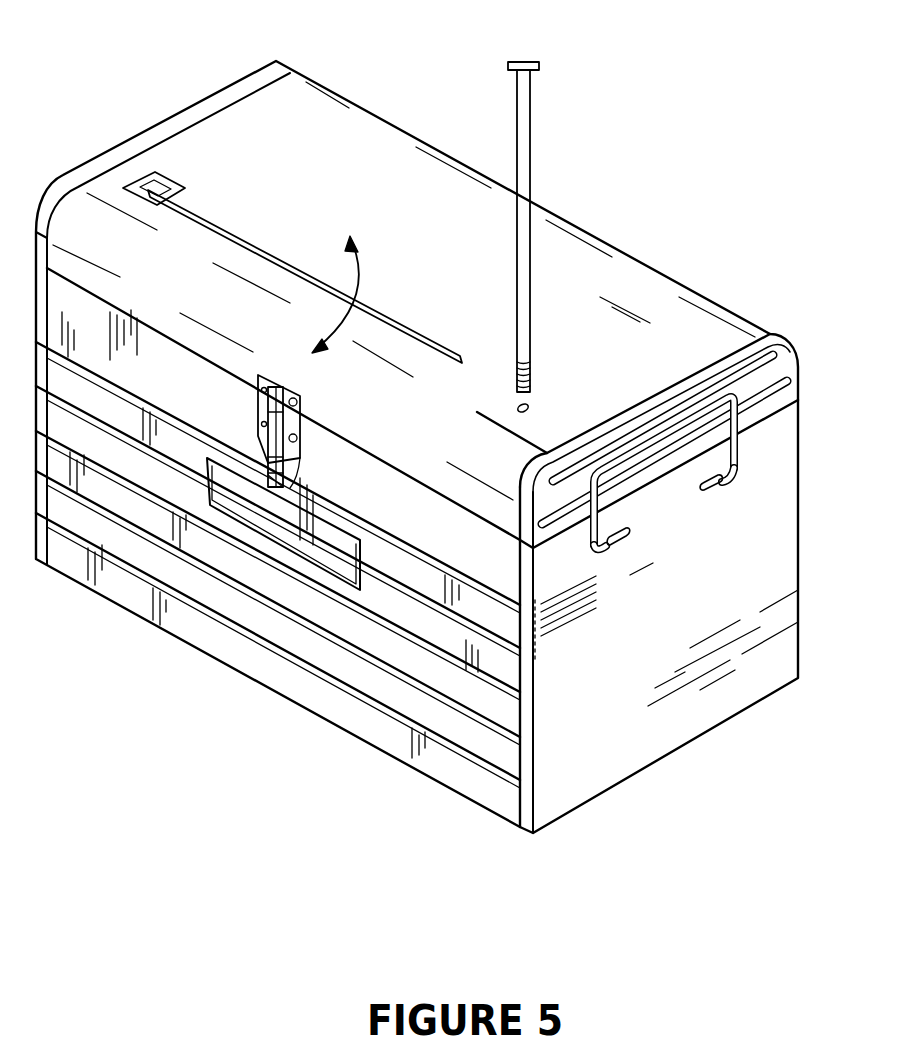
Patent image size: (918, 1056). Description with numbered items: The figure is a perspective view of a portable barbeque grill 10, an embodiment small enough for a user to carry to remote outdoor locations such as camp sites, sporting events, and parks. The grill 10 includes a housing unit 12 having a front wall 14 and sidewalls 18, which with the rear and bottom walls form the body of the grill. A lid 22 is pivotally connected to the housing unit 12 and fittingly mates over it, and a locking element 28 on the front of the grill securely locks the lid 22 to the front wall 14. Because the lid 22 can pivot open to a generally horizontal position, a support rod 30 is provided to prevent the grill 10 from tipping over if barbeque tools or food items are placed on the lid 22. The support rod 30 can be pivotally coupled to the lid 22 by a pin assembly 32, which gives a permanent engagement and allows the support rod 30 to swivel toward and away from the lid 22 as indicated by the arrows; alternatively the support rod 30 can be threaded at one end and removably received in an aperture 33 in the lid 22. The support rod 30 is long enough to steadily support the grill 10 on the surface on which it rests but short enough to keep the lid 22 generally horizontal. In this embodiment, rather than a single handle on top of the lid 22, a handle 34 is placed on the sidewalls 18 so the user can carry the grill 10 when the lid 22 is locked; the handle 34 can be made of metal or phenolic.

The portable barbeque grill 10 is at (736, 103).
The housing unit 12 is at (816, 564).
The front wall 14 is at (237, 652).
The sidewalls 18 is at (694, 628).
The lid 22 is at (270, 97).
The locking element 28 is at (300, 470).
The support rod 30 is at (531, 137).
The pin assembly 32 is at (164, 181).
The aperture 33 is at (532, 410).
The handle 34 is at (740, 456).